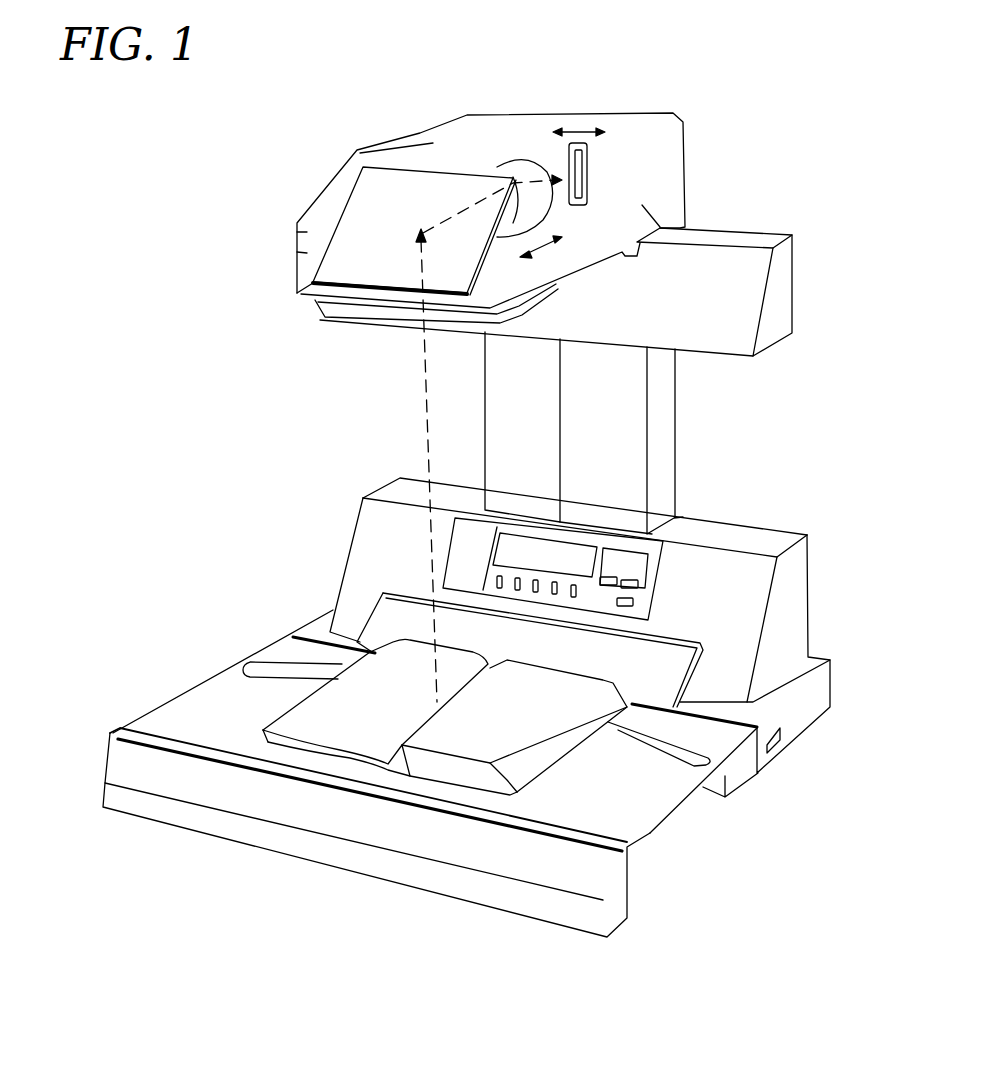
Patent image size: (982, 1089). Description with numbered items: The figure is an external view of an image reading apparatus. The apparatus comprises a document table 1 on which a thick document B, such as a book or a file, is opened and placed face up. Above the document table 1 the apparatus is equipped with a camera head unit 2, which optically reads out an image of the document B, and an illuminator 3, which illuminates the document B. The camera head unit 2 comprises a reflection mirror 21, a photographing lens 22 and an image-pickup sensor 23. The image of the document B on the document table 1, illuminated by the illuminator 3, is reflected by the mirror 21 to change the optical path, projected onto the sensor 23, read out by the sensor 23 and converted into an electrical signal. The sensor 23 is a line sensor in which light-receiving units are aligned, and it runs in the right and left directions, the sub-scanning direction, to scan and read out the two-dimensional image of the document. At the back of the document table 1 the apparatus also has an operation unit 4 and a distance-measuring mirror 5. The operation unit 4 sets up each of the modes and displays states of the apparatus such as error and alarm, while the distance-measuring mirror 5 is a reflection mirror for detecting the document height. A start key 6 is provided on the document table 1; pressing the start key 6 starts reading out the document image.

The document table 1 is at (650, 800).
The camera head unit 2 is at (326, 186).
The reflection mirror 21 is at (330, 272).
The photographing lens 22 is at (522, 163).
The image-pickup sensor 23 is at (593, 120).
The illuminator 3 is at (793, 237).
The operation unit 4 is at (663, 540).
The distance-measuring mirror 5 is at (380, 617).
The start key 6 is at (250, 668).
The document B is at (300, 707).